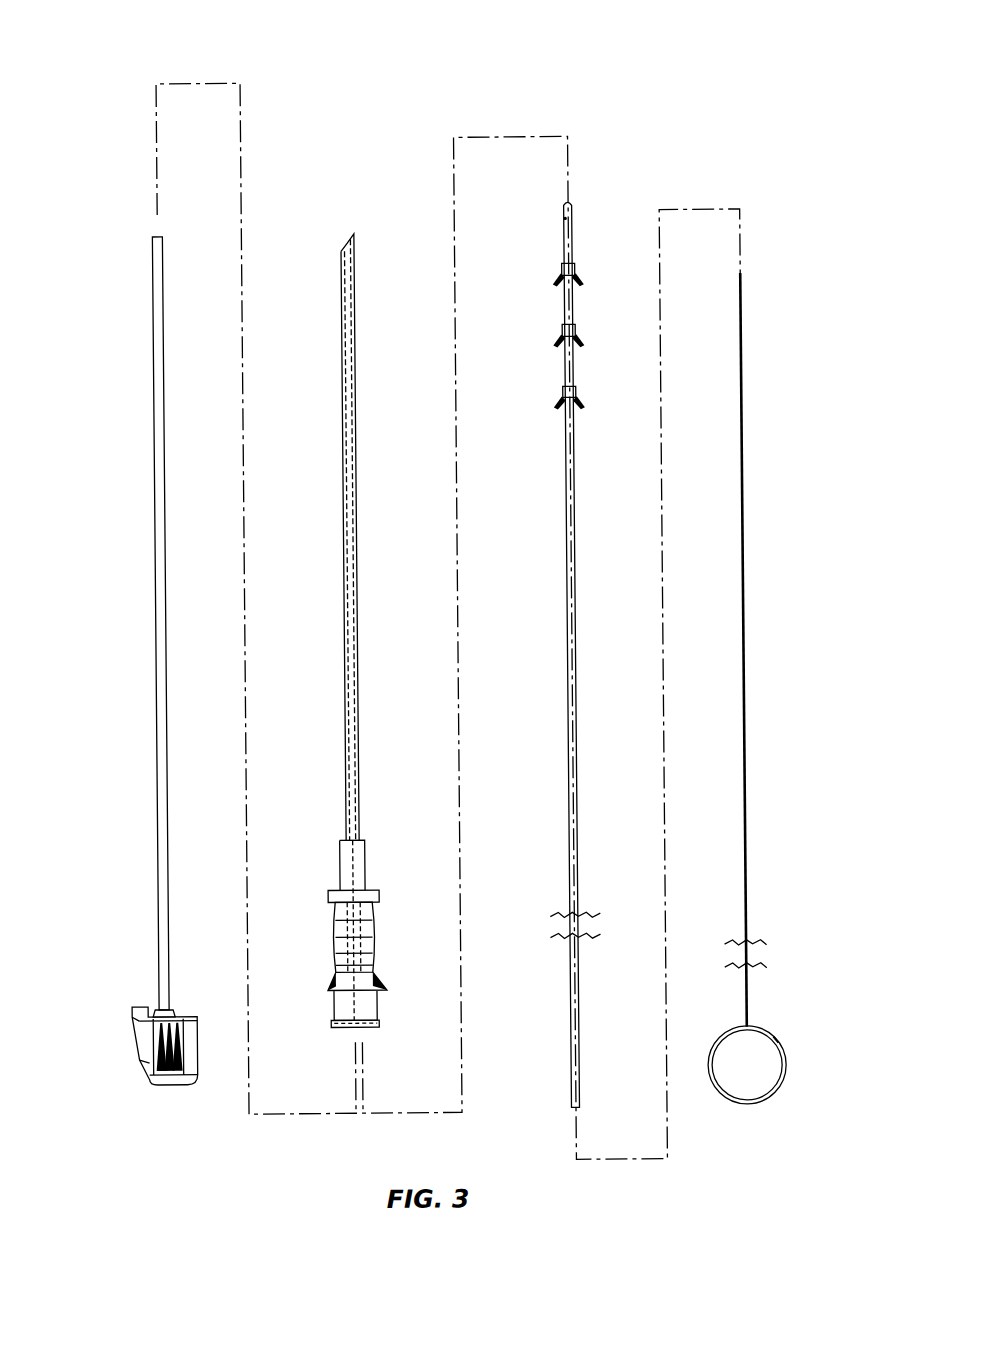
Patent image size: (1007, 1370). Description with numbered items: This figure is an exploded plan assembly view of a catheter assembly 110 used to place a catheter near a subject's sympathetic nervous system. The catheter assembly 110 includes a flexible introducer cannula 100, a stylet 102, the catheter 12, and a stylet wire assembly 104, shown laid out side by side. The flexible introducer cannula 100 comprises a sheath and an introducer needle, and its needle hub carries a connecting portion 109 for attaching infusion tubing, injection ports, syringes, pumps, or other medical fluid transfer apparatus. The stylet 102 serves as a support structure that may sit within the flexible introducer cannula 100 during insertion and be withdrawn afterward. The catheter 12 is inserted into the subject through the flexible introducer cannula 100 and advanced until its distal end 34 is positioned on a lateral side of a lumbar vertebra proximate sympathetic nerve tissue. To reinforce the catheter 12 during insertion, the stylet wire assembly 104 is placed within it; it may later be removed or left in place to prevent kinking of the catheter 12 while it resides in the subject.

The catheter assembly 110 is at (704, 80).
The stylet 102 is at (161, 366).
The flexible introducer cannula (FIC) 100 is at (347, 250).
The connecting portion 109 is at (375, 1026).
The catheter 12 is at (588, 637).
The distal end 34 is at (586, 216).
The stylet wire assembly 104 is at (745, 444).